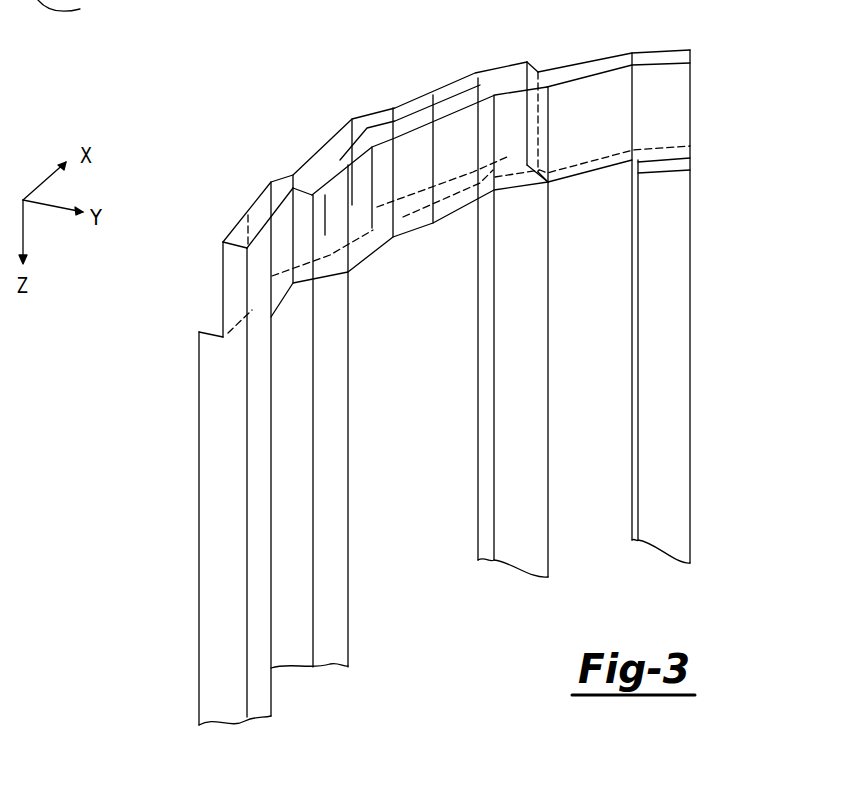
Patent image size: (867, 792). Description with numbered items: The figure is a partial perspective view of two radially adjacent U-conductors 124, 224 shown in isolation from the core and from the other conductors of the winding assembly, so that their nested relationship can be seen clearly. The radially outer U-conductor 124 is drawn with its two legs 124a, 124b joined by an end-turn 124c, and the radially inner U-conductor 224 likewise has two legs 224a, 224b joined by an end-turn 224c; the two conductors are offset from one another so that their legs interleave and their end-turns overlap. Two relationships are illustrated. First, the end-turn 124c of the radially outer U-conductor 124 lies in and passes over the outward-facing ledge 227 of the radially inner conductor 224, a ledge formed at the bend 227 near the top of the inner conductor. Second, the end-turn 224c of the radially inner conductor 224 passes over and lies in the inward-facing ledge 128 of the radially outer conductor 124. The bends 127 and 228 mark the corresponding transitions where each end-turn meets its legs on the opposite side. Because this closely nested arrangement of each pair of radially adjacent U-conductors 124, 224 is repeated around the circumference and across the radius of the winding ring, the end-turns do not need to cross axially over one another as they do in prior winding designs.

The radially outer U-conductor 124 is at (305, 362).
The first leg of first hairpin 124a is at (225, 641).
The second leg of first hairpin 124b is at (512, 358).
The crown portion of first hairpin 124c is at (378, 116).
The first bend of first hairpin 127 is at (222, 333).
The inward-facing ledge 128 is at (507, 160).
The radially inner U-conductor 224 is at (538, 334).
The first leg of second hairpin 224a is at (298, 515).
The second leg of second hairpin 224b is at (672, 440).
The crown portion of second hairpin 224c is at (590, 106).
The outward-facing ledge 227 is at (293, 185).
The second bend of second hairpin 228 is at (683, 162).